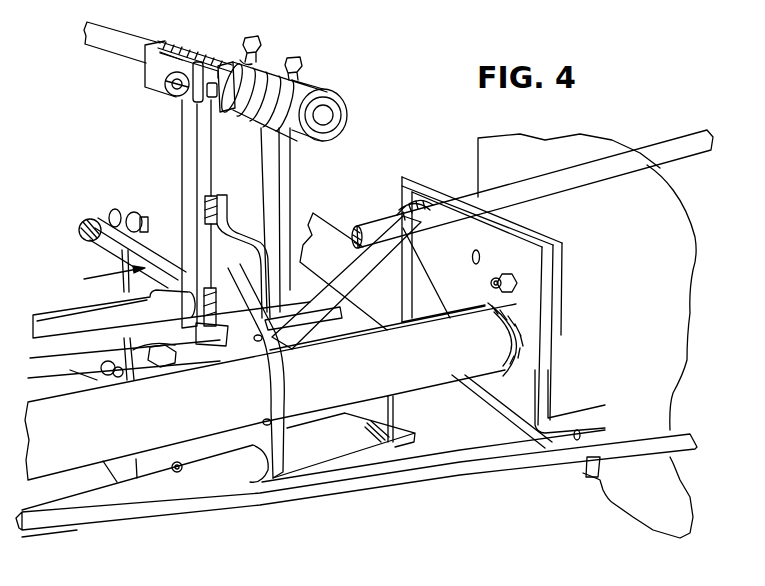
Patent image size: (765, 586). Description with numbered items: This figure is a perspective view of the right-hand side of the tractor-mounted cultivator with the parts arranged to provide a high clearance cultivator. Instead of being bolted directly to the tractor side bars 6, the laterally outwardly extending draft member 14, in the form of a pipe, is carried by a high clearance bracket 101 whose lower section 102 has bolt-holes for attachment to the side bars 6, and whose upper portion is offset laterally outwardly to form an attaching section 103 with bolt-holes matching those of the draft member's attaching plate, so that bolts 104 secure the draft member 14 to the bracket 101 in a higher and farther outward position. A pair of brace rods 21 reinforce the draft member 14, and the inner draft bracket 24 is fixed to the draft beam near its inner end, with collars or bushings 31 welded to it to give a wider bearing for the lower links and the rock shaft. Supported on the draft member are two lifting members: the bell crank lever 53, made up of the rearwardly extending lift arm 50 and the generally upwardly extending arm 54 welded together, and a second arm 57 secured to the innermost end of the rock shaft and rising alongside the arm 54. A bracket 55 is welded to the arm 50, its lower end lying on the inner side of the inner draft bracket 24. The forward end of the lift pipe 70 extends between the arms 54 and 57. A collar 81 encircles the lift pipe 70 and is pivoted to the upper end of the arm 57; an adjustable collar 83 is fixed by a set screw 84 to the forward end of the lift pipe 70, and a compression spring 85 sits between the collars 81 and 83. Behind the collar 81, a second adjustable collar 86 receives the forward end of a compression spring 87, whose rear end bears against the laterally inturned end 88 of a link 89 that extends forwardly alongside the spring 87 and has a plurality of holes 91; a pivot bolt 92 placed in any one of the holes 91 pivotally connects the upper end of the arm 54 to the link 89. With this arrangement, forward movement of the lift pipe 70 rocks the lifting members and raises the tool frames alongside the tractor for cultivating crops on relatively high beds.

The lift pipe 70 is at (113, 37).
The compression spring 87 is at (199, 52).
The laterally inturned end 88 is at (209, 47).
The second adjustable collar 86 is at (236, 55).
The collar 81 is at (243, 58).
The compression spring 85 is at (268, 78).
The set screw 84 is at (301, 65).
The adjustable collar 83 is at (334, 97).
The link 89 is at (157, 75).
The pivot bolt 92 is at (172, 90).
The holes 91 is at (211, 92).
The arm 54 is at (188, 162).
The bracket 55 is at (231, 229).
The second arm 57 is at (274, 178).
The lift arm 50 is at (144, 252).
The bell crank lever 53 is at (103, 276).
The brace rods 21 is at (43, 320).
The collars or bushings 31 is at (233, 322).
The second bracket 24 is at (287, 410).
The side bars 6 is at (321, 234).
The draft member 14 is at (424, 385).
The bolts 104 is at (495, 284).
The attaching section 103 is at (554, 298).
The high clearance bracket 101 is at (505, 410).
The lower section 102 is at (555, 445).